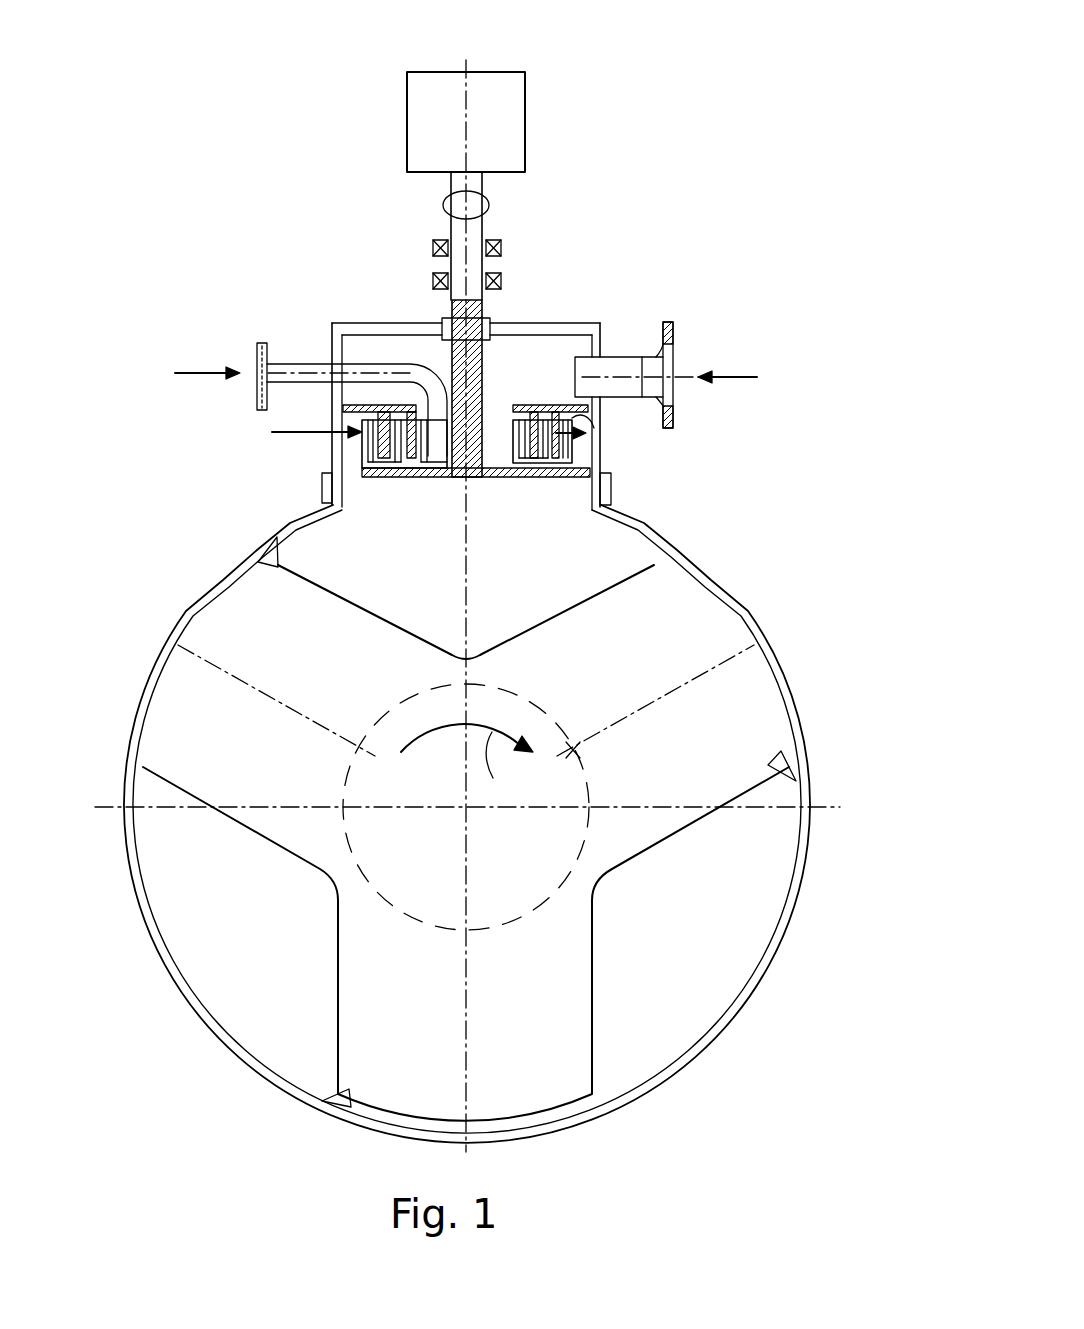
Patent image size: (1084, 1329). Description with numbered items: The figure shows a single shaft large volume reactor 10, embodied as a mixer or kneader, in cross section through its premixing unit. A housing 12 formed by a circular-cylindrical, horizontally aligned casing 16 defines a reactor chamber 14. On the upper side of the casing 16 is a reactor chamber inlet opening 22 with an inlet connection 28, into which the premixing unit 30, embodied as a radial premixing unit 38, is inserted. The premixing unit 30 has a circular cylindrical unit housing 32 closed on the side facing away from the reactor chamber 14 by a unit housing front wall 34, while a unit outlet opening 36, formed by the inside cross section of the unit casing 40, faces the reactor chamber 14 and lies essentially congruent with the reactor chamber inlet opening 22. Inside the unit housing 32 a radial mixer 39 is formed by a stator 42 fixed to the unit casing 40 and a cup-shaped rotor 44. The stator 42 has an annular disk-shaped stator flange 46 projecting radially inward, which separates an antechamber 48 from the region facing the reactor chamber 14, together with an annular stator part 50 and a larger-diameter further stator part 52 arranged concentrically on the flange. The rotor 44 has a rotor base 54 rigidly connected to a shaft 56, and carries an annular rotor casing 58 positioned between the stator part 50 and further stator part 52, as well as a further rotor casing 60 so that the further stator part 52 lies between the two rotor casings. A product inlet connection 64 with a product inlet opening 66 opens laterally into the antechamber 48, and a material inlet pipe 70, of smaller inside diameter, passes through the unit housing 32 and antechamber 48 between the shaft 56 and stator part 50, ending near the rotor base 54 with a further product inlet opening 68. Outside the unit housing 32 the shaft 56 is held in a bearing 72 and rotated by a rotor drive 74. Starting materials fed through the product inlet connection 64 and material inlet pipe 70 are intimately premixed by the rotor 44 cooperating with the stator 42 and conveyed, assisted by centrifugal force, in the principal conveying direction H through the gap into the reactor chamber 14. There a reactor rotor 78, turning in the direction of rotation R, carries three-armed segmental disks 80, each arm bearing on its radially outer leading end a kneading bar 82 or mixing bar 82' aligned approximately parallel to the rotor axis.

The large volume reactor 10 is at (826, 545).
The housing 12 is at (784, 972).
The reactor chamber 14 is at (672, 1000).
The casing 16 is at (800, 907).
The reactor chamber inlet opening 22 is at (600, 510).
The inlet connection 28 is at (322, 486).
The premixing unit 30 is at (688, 233).
The unit housing 32 is at (326, 332).
The unit housing front wall 34 is at (407, 346).
The unit outlet opening 36 is at (298, 522).
The radial premixing unit 38 is at (579, 243).
The radial mixer 39 is at (294, 435).
The unit casing 40 is at (600, 456).
The stator 42 is at (530, 384).
The rotor 44 is at (492, 440).
The stator flange 46 is at (557, 404).
The antechamber 48 is at (400, 343).
The stator part 50 is at (418, 478).
The further stator part 52 is at (387, 478).
The rotor base 54 is at (488, 478).
The shaft 56 is at (485, 232).
The rotor casing 58 is at (534, 478).
The further rotor casing 60 is at (567, 478).
The product inlet connection 64 is at (667, 367).
The product inlet opening 66 is at (582, 362).
The further product inlet opening 68 is at (437, 478).
The material inlet pipe 70 is at (302, 364).
The bearing 72 is at (436, 268).
The rotor drive 74 is at (500, 95).
The reactor rotor 78 is at (192, 722).
The segmental disk 80 is at (735, 720).
The kneading bar 82 is at (577, 822).
The mixing bar 82' is at (858, 767).
The principal conveying direction H is at (598, 418).
The direction of rotation R is at (467, 763).